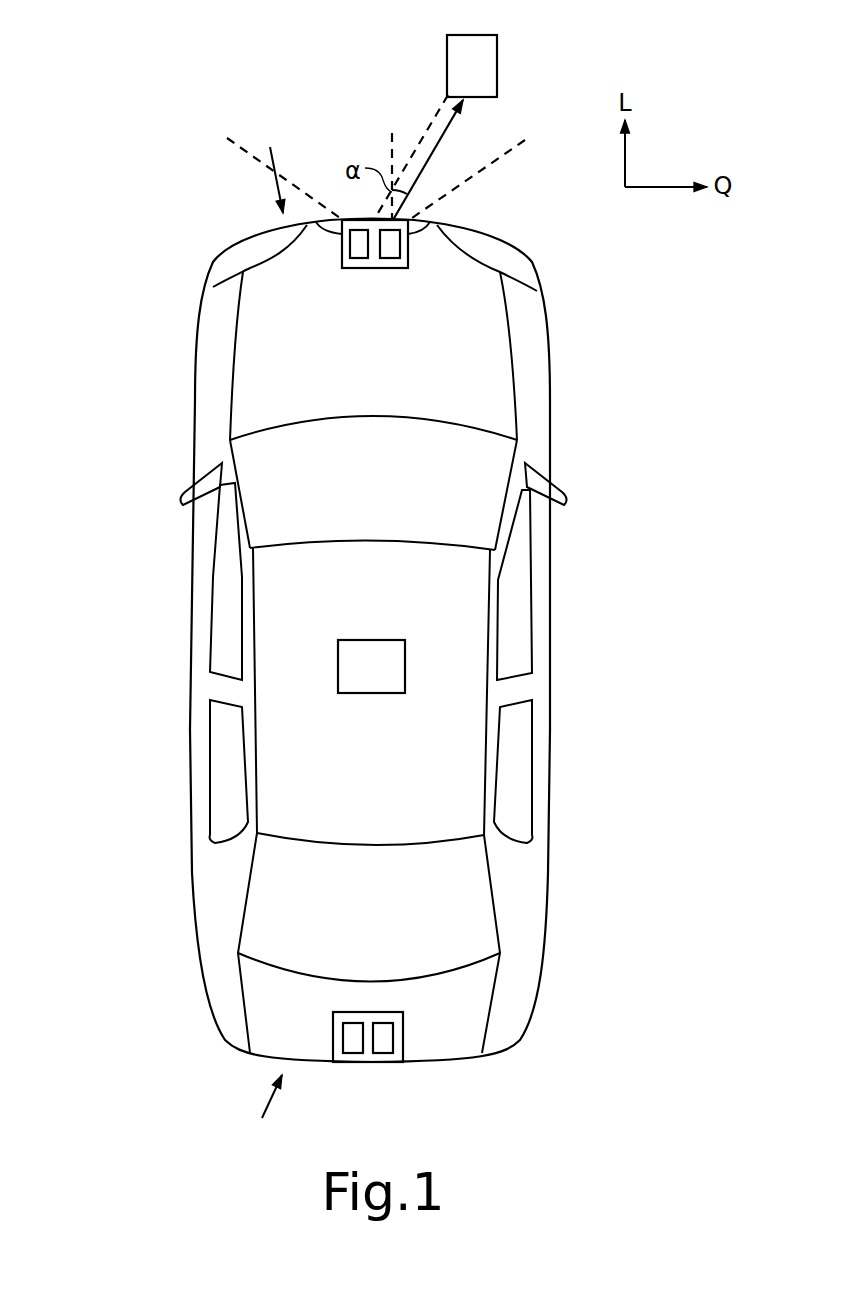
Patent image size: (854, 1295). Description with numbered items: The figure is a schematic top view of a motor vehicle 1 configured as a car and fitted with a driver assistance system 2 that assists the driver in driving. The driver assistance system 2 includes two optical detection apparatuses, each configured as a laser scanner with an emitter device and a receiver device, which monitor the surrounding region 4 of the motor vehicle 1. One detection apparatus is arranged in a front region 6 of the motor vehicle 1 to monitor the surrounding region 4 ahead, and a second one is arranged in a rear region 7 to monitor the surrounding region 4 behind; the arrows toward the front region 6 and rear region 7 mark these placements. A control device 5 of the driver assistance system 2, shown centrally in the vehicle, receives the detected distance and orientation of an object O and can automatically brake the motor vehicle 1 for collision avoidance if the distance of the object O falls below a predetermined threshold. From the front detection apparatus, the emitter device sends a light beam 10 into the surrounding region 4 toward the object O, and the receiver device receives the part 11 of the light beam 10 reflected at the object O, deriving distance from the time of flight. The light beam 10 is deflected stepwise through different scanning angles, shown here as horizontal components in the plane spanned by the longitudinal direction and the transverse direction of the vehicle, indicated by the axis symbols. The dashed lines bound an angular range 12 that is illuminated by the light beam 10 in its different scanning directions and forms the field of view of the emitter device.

The motor vehicle 1 is at (197, 350).
The driver assistance system 2 is at (452, 613).
The surrounding region 4 is at (61, 384).
The control device 5 is at (367, 693).
The front region 6 is at (271, 165).
The rear region 7 is at (266, 1111).
The light beam 10 is at (443, 147).
The reflected part of the light beam 11 is at (432, 123).
The angular range 12 is at (323, 143).
The object O is at (497, 65).